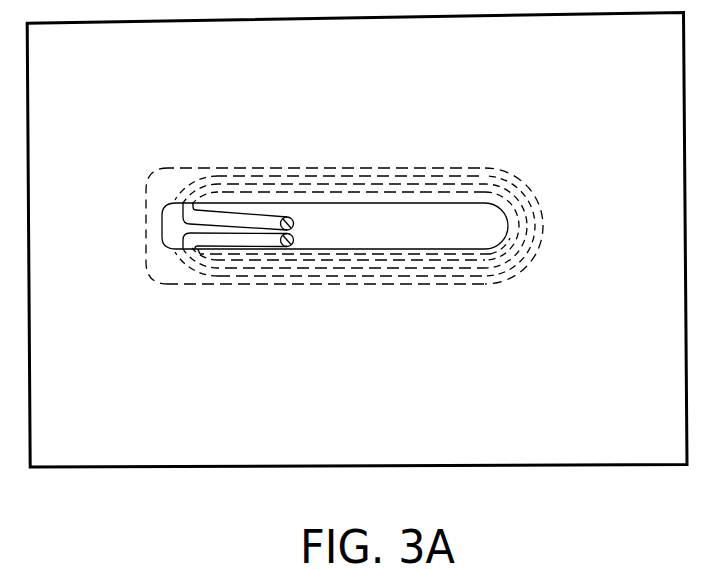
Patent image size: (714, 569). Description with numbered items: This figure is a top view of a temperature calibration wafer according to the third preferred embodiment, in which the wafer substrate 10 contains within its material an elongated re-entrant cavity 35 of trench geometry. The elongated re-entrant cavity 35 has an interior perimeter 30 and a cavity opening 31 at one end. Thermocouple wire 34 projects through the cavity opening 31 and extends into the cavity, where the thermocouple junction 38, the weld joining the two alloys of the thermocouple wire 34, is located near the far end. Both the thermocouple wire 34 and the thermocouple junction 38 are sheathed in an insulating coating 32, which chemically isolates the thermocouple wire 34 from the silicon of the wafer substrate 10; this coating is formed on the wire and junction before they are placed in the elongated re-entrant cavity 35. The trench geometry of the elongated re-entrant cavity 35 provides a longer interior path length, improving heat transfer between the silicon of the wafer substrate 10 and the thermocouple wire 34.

The wafer substrate 10 is at (357, 240).
The interior perimeter 30 is at (192, 170).
The cavity opening 31 is at (150, 182).
The insulating coating 32 is at (355, 178).
The thermocouple wire 34 is at (183, 237).
The elongated re-entrant cavity 35 is at (528, 177).
The thermocouple junction 38 is at (533, 222).